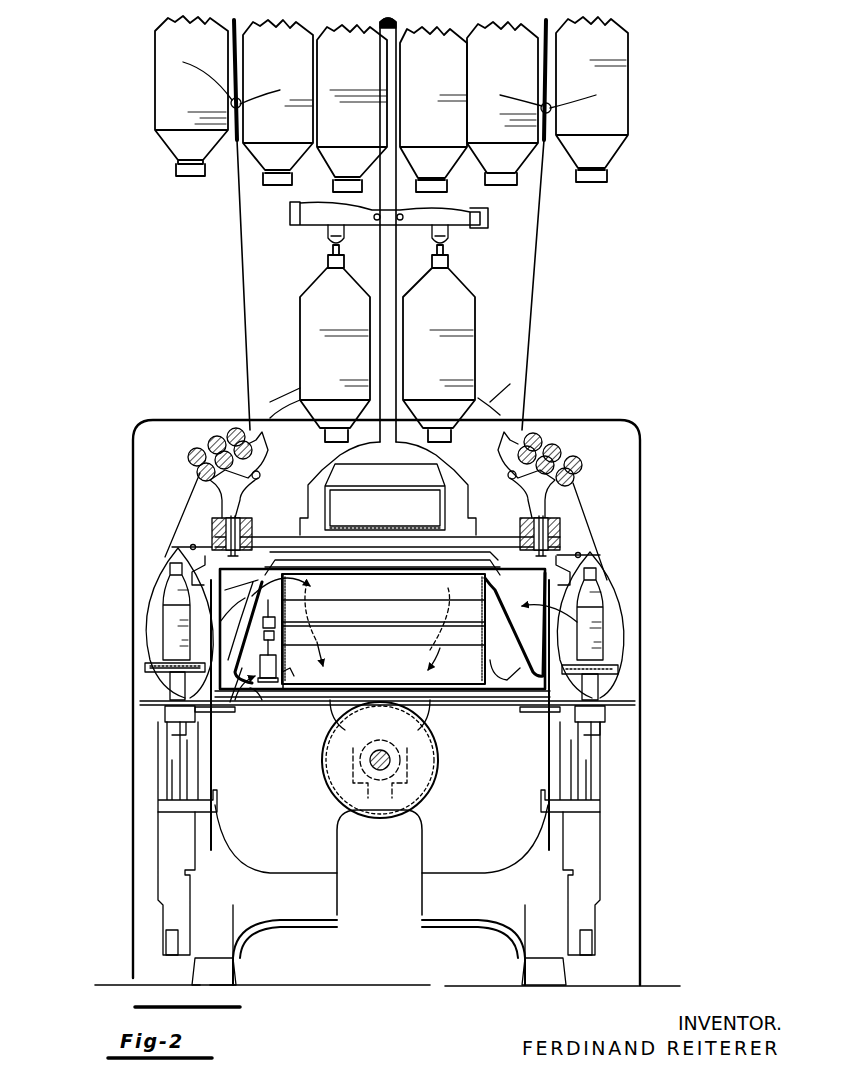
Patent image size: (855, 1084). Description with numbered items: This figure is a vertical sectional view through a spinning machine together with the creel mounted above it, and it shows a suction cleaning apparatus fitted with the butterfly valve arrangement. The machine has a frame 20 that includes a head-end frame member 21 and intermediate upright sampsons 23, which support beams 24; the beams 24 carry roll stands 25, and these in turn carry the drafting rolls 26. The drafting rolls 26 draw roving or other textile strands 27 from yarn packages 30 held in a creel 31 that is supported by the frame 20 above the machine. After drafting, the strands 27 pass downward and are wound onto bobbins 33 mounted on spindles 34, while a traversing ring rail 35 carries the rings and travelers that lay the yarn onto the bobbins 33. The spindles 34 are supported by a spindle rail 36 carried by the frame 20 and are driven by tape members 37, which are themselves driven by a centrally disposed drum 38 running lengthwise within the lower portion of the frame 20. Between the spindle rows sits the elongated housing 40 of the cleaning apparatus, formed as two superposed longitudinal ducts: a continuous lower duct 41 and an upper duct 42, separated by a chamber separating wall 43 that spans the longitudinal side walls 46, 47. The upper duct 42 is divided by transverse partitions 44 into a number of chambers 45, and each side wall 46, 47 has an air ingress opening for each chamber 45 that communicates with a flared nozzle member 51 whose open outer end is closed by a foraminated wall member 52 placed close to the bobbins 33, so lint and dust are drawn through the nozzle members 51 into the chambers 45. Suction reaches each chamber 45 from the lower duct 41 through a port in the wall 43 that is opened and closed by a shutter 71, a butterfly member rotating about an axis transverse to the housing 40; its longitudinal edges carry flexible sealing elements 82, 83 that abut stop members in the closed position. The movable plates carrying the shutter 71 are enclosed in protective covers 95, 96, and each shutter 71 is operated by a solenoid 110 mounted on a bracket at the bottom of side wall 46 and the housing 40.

The frame 20 is at (652, 542).
The head-end frame member 21 is at (640, 452).
The intermediate upright frame member 23 is at (292, 524).
The beam 24 is at (212, 528).
The roll stand 25 is at (234, 500).
The drafting roll 26 is at (212, 432).
The textile strand 27 is at (250, 270).
The yarn package 30 is at (155, 96).
The creel 31 is at (312, 233).
The bobbin 33 is at (165, 612).
The spindle 34 is at (160, 690).
The traversing ring rail 35 is at (146, 666).
The spindle rail 36 is at (165, 722).
The tape member 37 is at (468, 716).
The drum 38 is at (442, 772).
The elongated housing 40 is at (398, 636).
The lower duct 41 is at (440, 718).
The upper duct 42 is at (442, 556).
The chamber separating wall 43 is at (390, 660).
The transverse partition 44 is at (383, 629).
The upper chamber 45 is at (348, 588).
The side wall 46 is at (300, 671).
The side wall 47 is at (484, 670).
The nozzle member 51 is at (222, 700).
The foraminated wall member 52 is at (178, 634).
The shutter 71 is at (432, 590).
The sealing element 82 is at (367, 594).
The sealing element 83 is at (334, 655).
The protective cover 95 is at (265, 630).
The protective cover 96 is at (490, 635).
The solenoid 110 is at (269, 702).